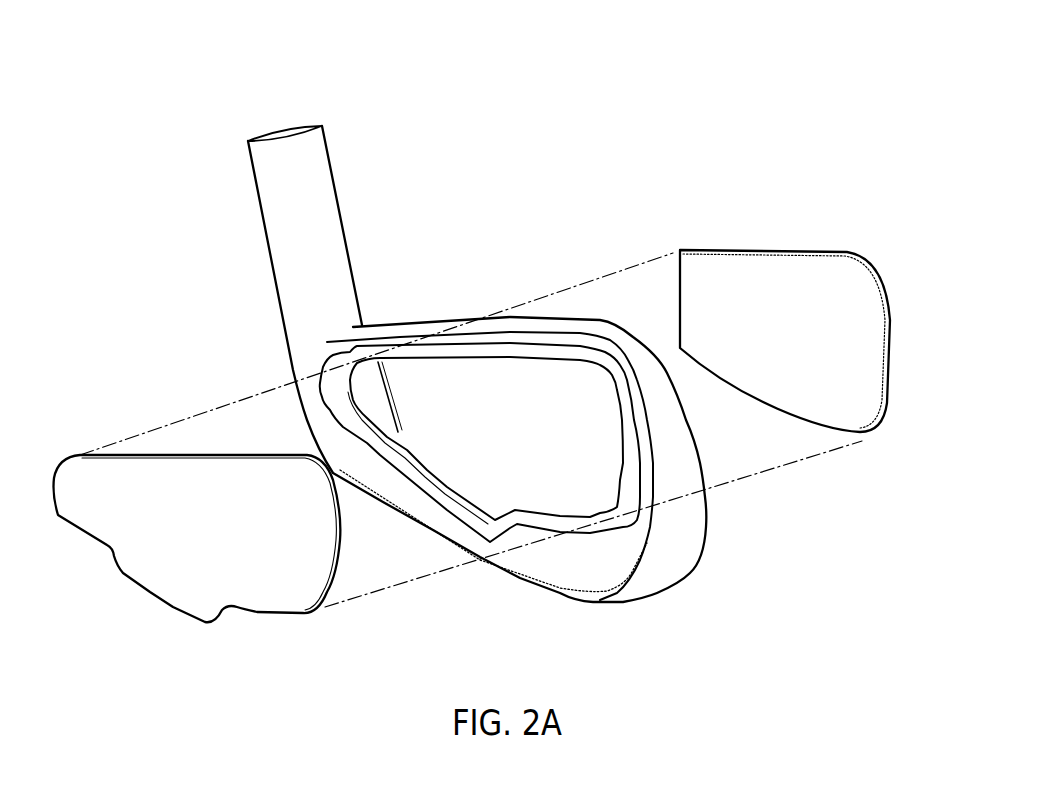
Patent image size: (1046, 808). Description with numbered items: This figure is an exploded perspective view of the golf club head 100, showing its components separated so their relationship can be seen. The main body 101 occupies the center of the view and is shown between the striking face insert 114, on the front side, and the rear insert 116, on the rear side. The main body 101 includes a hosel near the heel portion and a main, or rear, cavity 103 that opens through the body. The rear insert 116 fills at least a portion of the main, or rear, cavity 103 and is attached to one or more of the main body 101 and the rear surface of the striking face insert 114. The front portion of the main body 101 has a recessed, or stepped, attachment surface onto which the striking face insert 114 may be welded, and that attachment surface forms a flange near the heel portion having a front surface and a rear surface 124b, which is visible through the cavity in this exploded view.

The golf club head 100 is at (592, 81).
The main body 101 is at (729, 550).
The main, or rear, cavity 103 is at (575, 435).
The striking face insert 114 is at (772, 248).
The rear insert 116 is at (187, 592).
The rear surface 124b is at (375, 395).